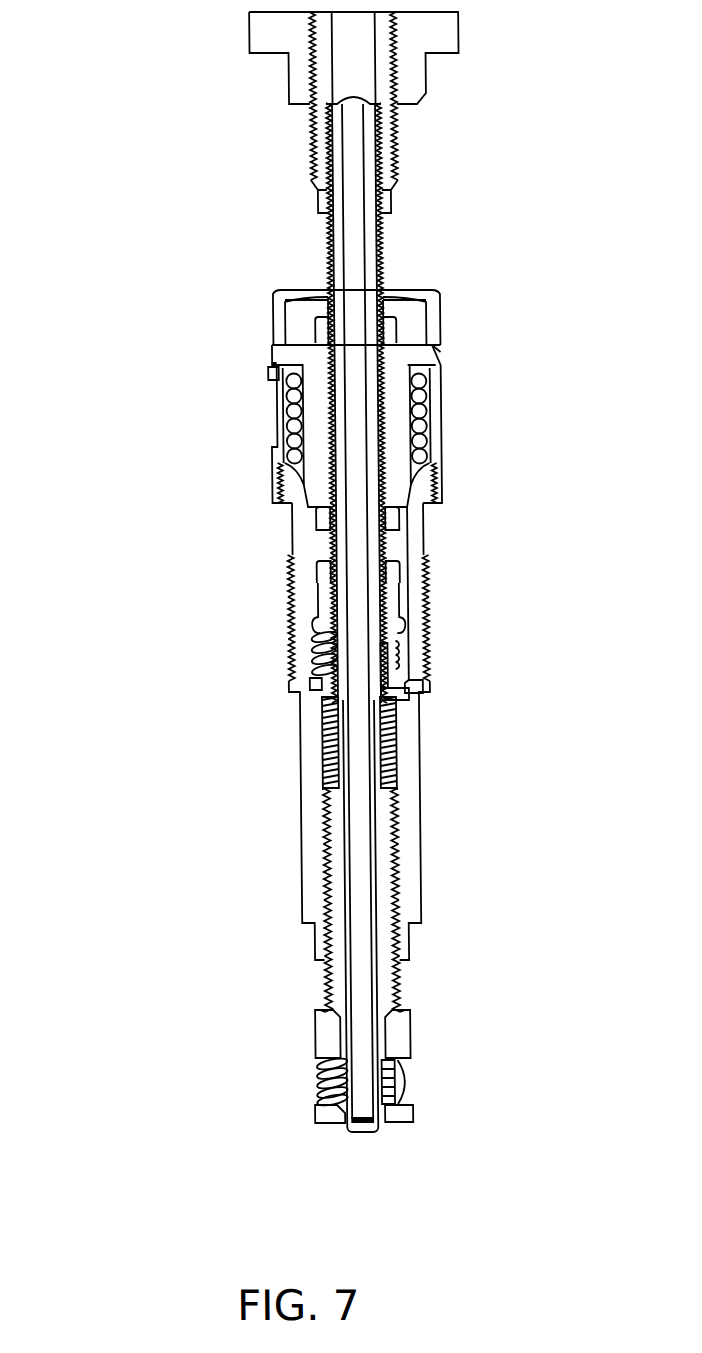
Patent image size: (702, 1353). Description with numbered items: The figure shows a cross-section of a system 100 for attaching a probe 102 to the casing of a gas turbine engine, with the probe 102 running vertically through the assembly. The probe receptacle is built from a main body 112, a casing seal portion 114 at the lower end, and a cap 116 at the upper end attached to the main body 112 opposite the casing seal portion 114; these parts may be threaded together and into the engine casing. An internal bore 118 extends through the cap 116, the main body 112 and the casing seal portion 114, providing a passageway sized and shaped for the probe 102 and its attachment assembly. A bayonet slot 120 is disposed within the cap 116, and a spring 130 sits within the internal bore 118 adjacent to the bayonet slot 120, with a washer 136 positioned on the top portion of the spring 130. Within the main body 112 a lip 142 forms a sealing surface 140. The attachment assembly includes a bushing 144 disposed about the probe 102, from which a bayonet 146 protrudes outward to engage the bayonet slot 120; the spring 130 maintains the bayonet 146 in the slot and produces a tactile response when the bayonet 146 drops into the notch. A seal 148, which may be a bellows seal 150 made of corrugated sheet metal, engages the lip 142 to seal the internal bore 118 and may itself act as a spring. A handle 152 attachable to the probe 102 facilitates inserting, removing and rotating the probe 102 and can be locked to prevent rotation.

The system 100 is at (158, 20).
The probe 102 is at (362, 827).
The main body 112 is at (413, 878).
The casing seal portion 114 is at (402, 1030).
The cap 116 is at (430, 288).
The internal bore 118 is at (315, 743).
The bayonet slot 120 is at (446, 343).
The spring 130 is at (414, 432).
The washer 136 is at (275, 370).
The sealing surface 140 is at (388, 695).
The lip 142 is at (301, 689).
The bushing 144 is at (310, 412).
The bayonet 146 is at (269, 363).
The seal 148 is at (404, 688).
The bellows seal 150 is at (305, 652).
The handle 152 is at (442, 57).